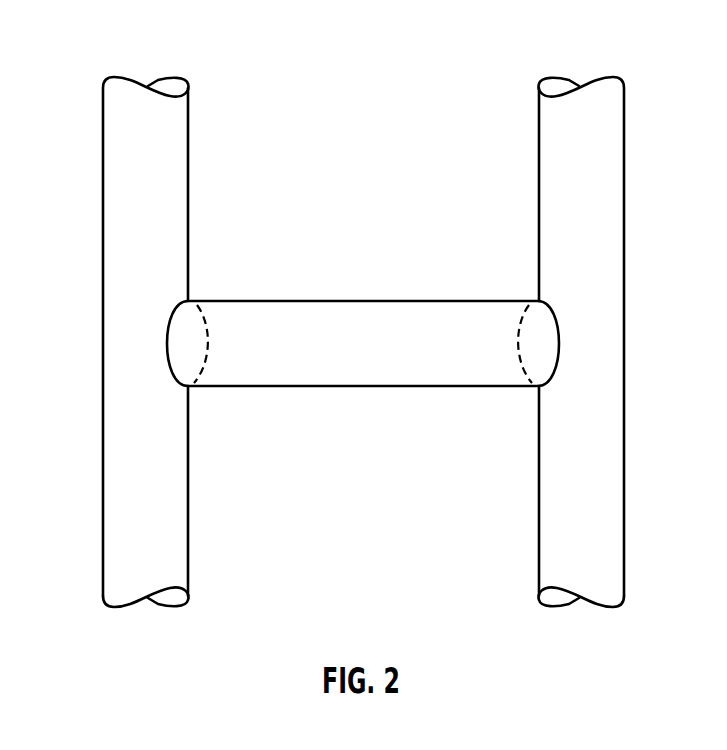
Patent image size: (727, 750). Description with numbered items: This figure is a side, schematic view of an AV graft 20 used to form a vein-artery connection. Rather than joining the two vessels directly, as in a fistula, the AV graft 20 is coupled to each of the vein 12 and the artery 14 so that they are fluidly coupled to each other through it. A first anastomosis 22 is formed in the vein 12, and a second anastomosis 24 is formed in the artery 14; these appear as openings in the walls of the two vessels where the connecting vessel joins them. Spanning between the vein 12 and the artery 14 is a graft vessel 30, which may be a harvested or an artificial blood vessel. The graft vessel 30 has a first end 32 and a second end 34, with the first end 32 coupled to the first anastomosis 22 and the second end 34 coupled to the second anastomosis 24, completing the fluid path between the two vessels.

The AV graft 20 is at (388, 51).
The vein 12 is at (612, 182).
The artery 14 is at (115, 182).
The first anastomosis 22 is at (194, 323).
The second anastomosis 24 is at (533, 323).
The graft vessel 30 is at (363, 373).
The first end 32 is at (212, 373).
The second end 34 is at (515, 373).